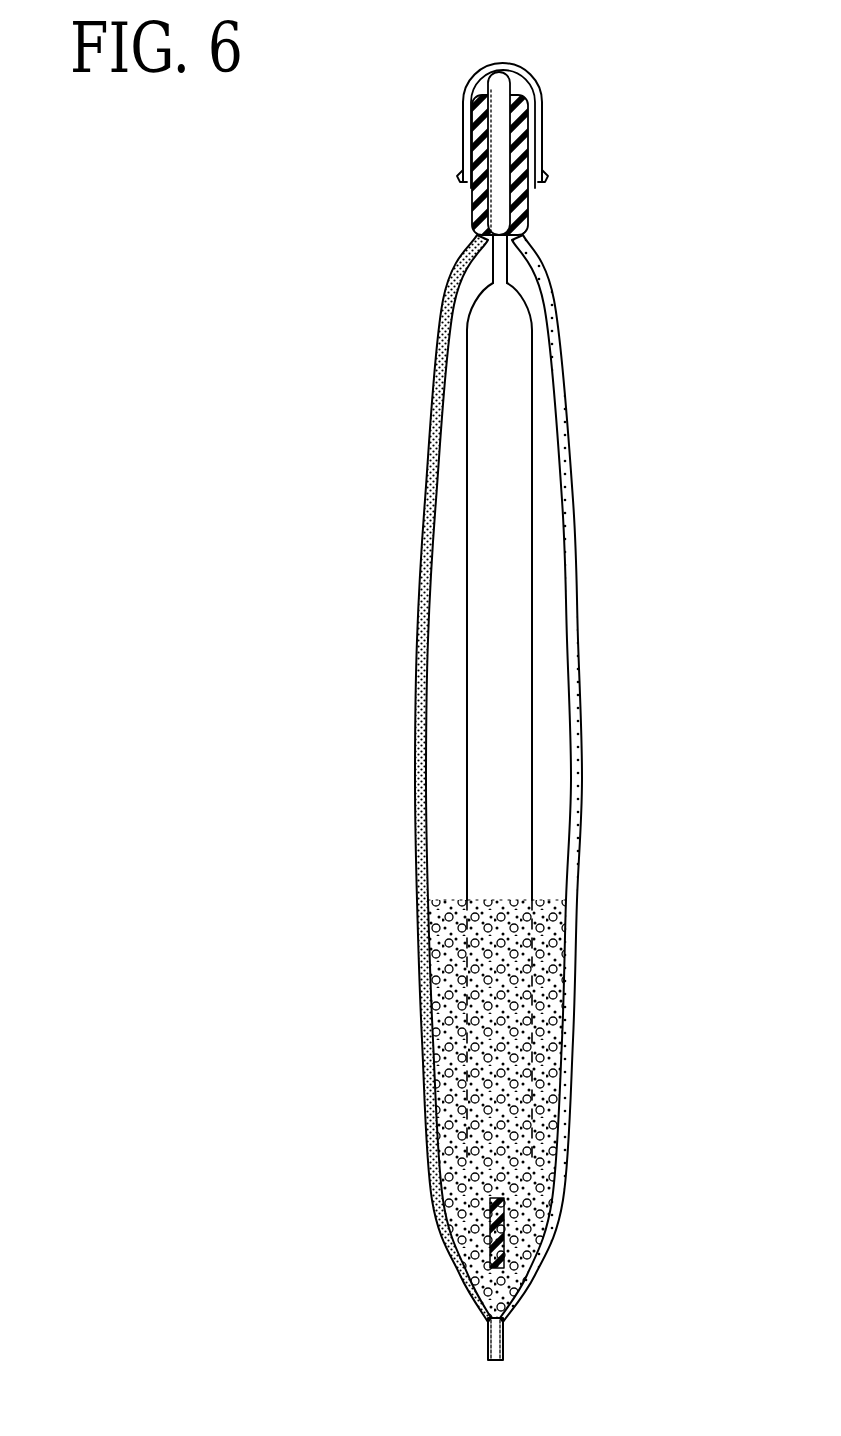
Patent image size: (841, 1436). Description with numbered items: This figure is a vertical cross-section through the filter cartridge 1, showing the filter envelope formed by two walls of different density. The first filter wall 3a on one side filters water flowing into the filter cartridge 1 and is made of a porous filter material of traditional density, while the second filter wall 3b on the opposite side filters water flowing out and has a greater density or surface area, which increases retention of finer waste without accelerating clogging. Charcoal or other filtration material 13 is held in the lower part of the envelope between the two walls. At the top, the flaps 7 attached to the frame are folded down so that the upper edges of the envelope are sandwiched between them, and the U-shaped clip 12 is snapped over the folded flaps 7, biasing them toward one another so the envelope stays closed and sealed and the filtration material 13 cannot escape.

The filter cartridge 1 is at (440, 797).
The first filter wall 3a is at (575, 596).
The second filter wall 3b is at (418, 638).
The flaps 7 is at (472, 188).
The clip 12 is at (543, 88).
The filtration material 13 is at (517, 1012).